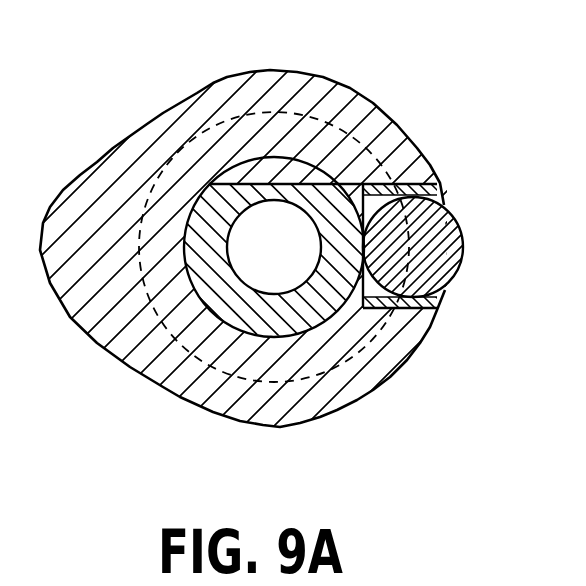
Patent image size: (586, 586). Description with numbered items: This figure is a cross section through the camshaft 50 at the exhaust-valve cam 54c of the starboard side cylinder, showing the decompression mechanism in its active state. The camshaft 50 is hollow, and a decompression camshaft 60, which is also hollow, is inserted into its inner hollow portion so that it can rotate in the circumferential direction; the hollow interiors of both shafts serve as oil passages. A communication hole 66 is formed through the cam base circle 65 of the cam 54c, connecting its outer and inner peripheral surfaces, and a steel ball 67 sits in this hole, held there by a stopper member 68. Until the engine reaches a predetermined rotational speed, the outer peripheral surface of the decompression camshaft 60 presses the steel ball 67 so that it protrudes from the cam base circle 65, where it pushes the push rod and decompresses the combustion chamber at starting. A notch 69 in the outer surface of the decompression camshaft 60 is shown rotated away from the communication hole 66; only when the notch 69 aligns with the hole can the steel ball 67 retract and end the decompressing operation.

The cam 54c is at (92, 157).
The camshaft 50 is at (293, 112).
The decompression camshaft 60 is at (267, 325).
The notch 69 is at (265, 184).
The cam base circle 65 is at (403, 147).
The stopper member 68 is at (440, 190).
The steel ball 67 is at (448, 247).
The communication hole 66 is at (355, 303).